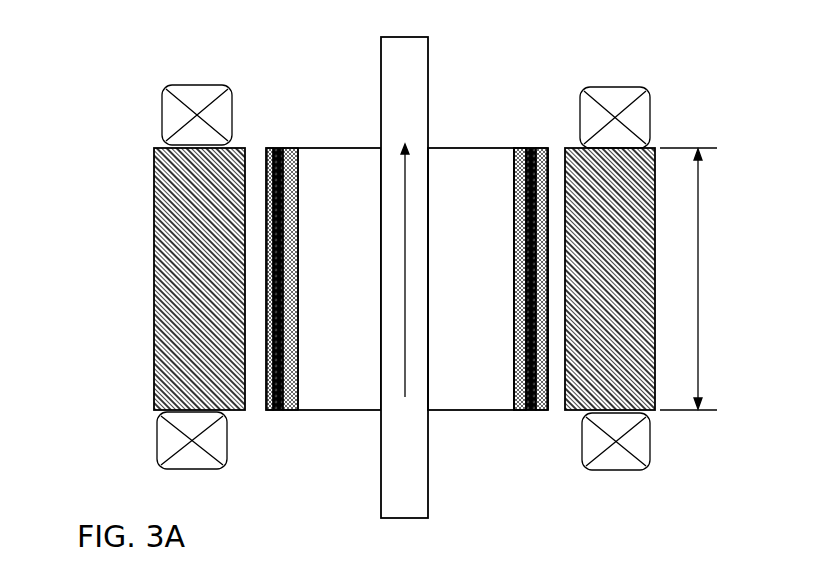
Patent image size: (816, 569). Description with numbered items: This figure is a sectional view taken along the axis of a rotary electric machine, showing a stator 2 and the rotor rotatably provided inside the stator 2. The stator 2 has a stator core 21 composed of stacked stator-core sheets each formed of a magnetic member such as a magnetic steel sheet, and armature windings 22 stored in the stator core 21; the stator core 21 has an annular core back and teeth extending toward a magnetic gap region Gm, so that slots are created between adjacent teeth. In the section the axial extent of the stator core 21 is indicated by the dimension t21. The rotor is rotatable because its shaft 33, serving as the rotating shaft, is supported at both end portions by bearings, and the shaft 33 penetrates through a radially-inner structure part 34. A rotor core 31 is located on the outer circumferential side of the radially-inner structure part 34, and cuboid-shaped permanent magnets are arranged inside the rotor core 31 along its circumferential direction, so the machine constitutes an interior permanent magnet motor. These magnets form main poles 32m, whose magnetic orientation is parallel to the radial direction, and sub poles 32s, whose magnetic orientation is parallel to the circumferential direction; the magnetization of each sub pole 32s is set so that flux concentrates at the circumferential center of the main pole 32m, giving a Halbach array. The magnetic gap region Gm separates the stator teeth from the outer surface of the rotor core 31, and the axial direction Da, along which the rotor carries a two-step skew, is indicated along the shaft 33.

The stator 2 is at (118, 96).
The stator core 21 is at (158, 183).
The armature windings 22 is at (184, 122).
The rotor core 31 is at (520, 148).
The main pole 32m is at (283, 147).
The sub pole 32s is at (536, 148).
The shaft 33 is at (405, 68).
The radially-inner structure part 34 is at (462, 162).
The axial direction Da is at (395, 270).
The magnetic gap region Gm is at (560, 403).
The thickness of stator core t21 is at (688, 279).